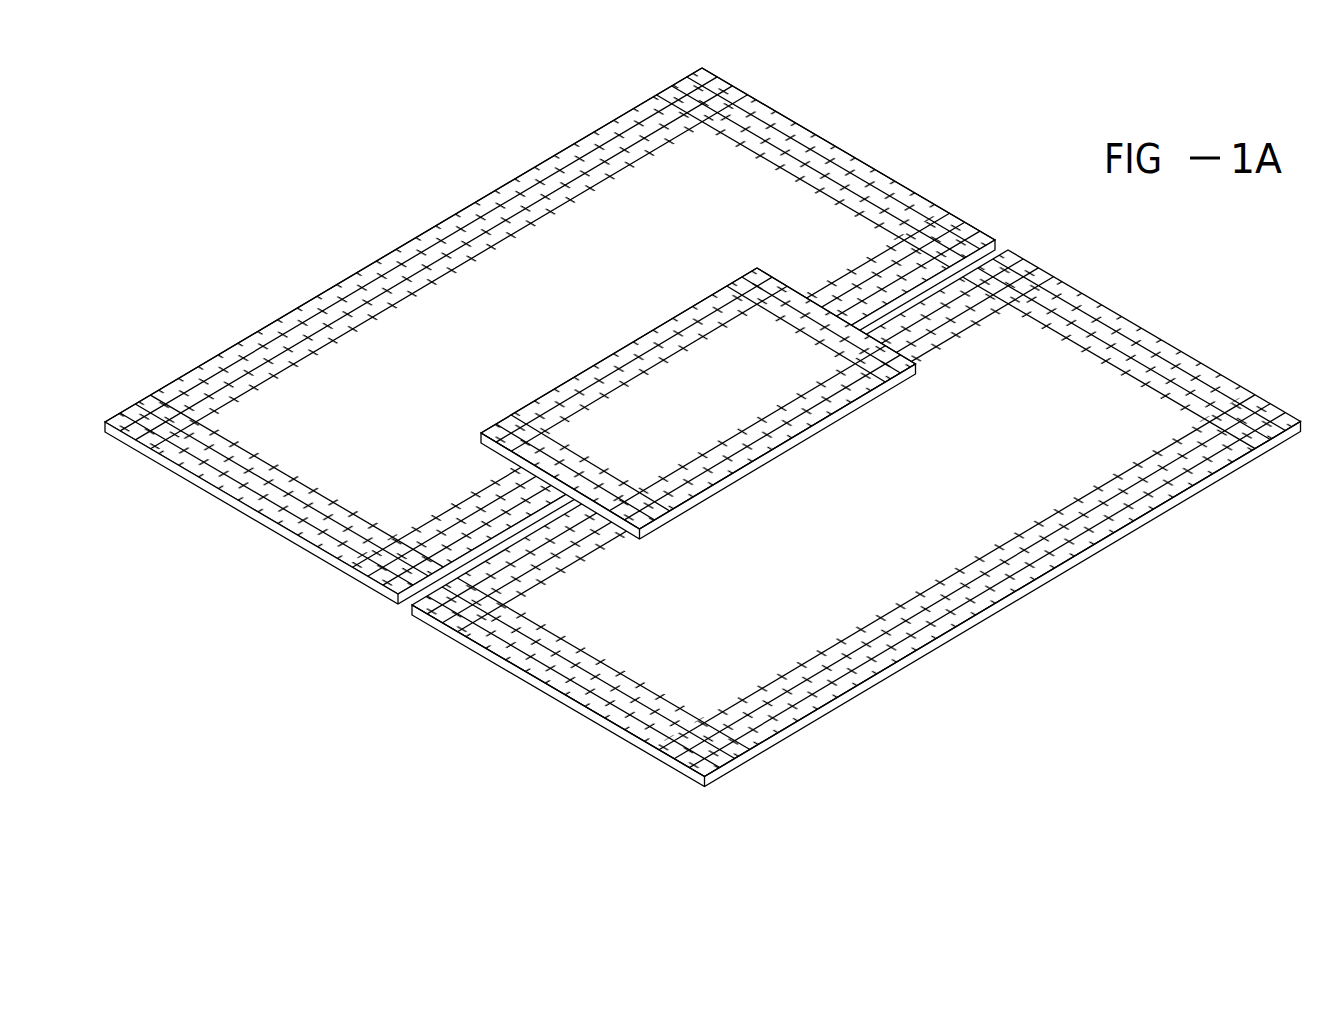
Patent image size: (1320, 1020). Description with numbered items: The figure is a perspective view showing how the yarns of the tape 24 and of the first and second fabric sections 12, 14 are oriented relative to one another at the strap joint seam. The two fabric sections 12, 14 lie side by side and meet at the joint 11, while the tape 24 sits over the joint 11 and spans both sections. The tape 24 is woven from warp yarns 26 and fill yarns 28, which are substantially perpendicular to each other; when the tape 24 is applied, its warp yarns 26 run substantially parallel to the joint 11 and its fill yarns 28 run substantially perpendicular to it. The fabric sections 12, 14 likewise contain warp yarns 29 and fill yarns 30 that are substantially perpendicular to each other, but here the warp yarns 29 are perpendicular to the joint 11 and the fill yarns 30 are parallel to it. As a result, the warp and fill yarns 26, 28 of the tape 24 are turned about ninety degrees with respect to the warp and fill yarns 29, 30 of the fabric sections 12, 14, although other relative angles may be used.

The joint 11 is at (703, 422).
The first fabric section 12 is at (829, 529).
The second fabric section 14 is at (587, 298).
The tape 24 is at (707, 414).
The warp yarns 26 is at (704, 398).
The fill yarns 28 is at (507, 395).
The warp yarns 29 is at (618, 105).
The fill yarns 30 is at (787, 108).